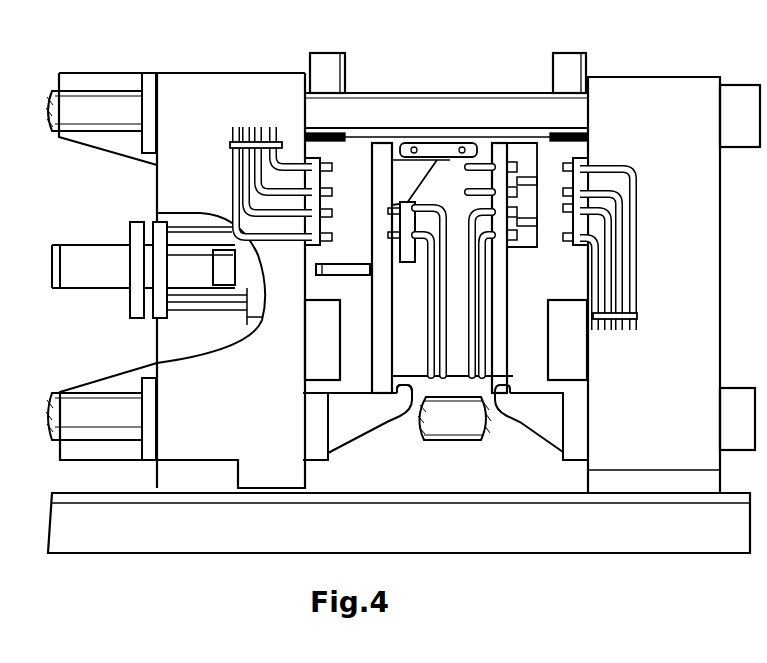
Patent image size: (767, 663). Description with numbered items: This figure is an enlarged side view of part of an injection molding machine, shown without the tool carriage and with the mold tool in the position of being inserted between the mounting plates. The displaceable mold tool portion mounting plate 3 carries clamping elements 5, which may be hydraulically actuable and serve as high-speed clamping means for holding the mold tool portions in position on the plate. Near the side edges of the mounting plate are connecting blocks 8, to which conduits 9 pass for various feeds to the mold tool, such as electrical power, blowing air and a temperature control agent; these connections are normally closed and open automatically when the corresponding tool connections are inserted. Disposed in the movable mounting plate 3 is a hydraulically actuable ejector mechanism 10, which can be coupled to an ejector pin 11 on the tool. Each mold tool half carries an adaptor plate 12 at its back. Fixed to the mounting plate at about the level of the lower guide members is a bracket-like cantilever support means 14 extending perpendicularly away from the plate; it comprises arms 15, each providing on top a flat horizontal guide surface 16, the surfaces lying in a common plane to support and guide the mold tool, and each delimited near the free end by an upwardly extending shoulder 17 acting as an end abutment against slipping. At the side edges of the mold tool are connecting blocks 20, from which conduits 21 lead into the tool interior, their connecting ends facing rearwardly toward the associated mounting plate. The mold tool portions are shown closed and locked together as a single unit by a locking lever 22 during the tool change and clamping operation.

The mold tool portion mounting plate 3 is at (221, 85).
The clamping elements 5 is at (333, 68).
The connecting blocks 8 is at (312, 153).
The conduits 9 is at (235, 177).
The ejector mechanism 10 is at (97, 275).
The ejector pin 11 is at (352, 264).
The adaptor plate 12 is at (385, 347).
The support means 14 is at (445, 432).
The arms 15 is at (362, 428).
The guide surface 16 is at (350, 393).
The shoulder 17 is at (397, 403).
The connecting blocks 20 is at (498, 152).
The conduits 21 is at (487, 267).
The locking lever 22 is at (433, 150).